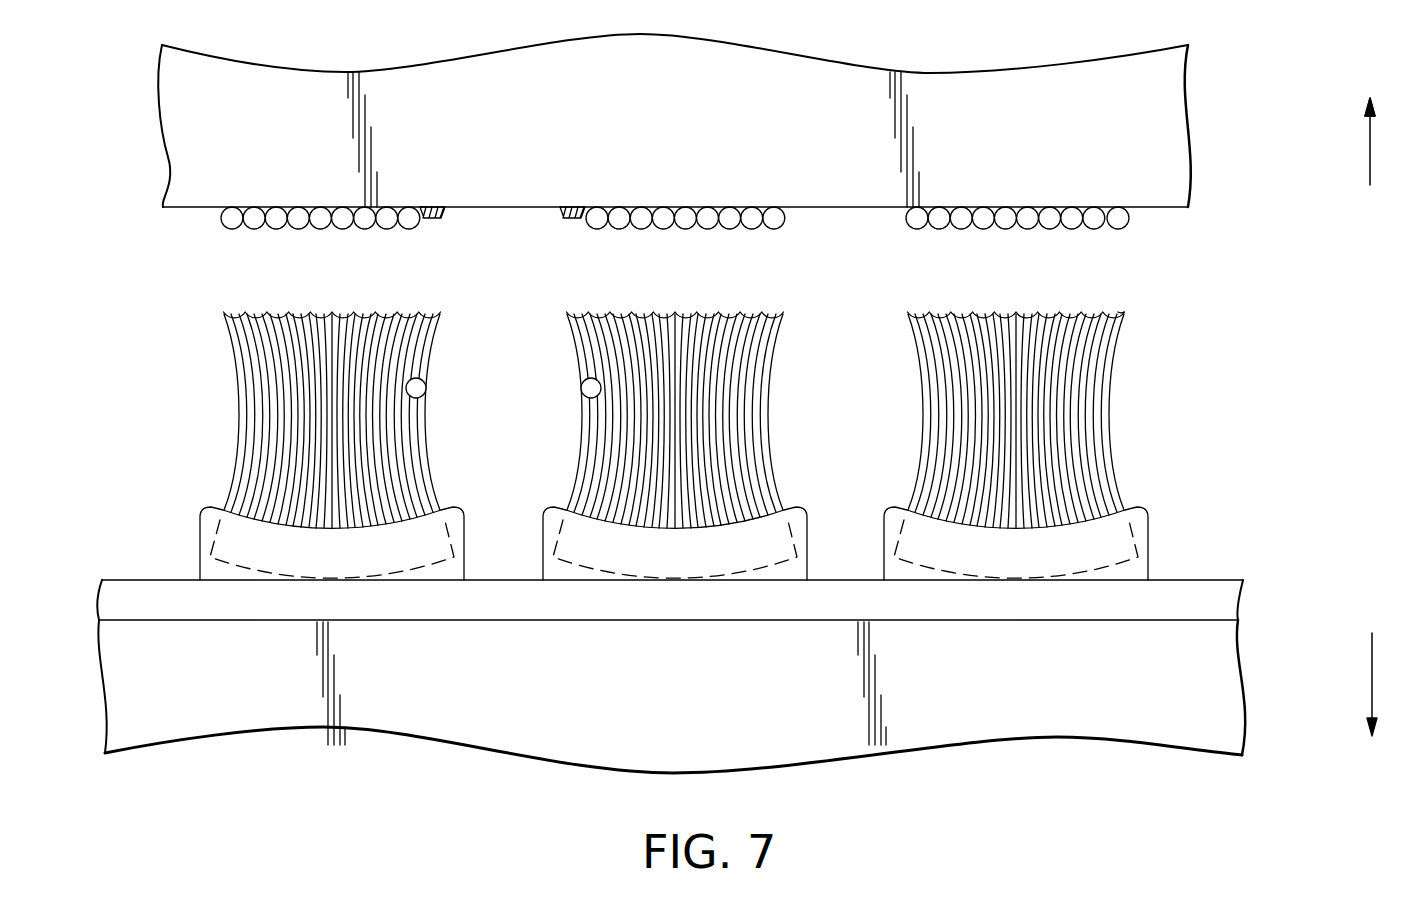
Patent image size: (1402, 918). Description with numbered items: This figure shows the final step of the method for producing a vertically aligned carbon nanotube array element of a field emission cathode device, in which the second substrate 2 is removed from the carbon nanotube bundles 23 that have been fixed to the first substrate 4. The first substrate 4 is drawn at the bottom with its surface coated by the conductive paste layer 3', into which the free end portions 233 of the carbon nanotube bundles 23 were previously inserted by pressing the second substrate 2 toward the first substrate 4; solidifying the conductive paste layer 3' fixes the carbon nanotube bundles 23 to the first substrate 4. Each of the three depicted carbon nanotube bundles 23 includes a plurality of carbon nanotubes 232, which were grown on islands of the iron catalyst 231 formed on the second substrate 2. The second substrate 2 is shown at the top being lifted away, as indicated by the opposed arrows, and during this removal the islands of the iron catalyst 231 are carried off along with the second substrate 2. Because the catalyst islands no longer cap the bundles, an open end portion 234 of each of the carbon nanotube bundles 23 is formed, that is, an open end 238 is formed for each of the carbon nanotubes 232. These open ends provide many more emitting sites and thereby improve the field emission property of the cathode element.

The second substrate 2 is at (1165, 117).
The islands of the iron catalyst 231 is at (1118, 218).
The carbon nanotube bundles 23 is at (1068, 417).
The carbon nanotubes 232 is at (1095, 398).
The free end portion 233 is at (1127, 521).
The open end portion 234 is at (1113, 313).
The open end 238 is at (1118, 315).
The conductive paste layer 3' is at (719, 600).
The first substrate 4 is at (1223, 717).